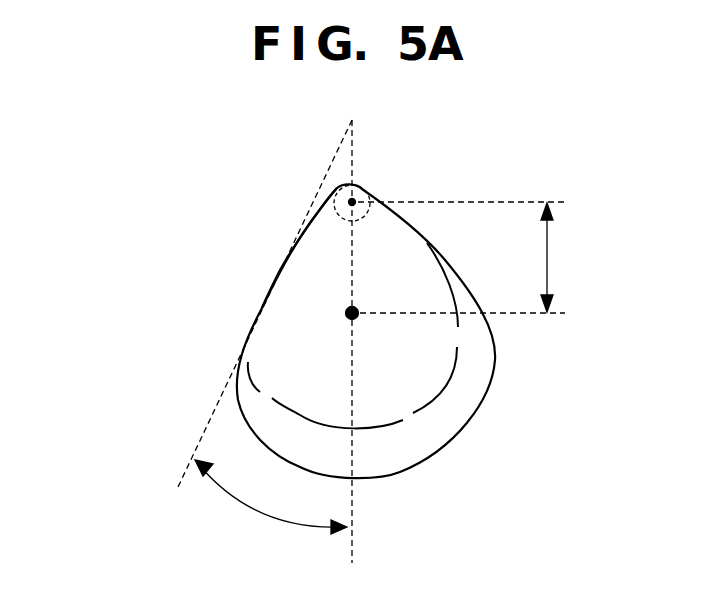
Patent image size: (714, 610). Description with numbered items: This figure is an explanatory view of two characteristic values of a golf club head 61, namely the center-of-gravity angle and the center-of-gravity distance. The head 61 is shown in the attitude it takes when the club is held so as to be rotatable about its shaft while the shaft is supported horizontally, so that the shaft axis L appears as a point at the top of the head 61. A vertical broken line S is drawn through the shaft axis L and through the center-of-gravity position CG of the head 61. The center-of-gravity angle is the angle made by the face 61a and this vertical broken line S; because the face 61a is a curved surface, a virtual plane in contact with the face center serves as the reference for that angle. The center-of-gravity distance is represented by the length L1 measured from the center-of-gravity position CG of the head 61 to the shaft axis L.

The head 61 is at (158, 292).
The face 61a is at (273, 287).
The shaft axis L is at (353, 200).
The center-of-gravity position CG is at (353, 310).
The length L1 is at (476, 257).
The vertical broken line S is at (352, 537).